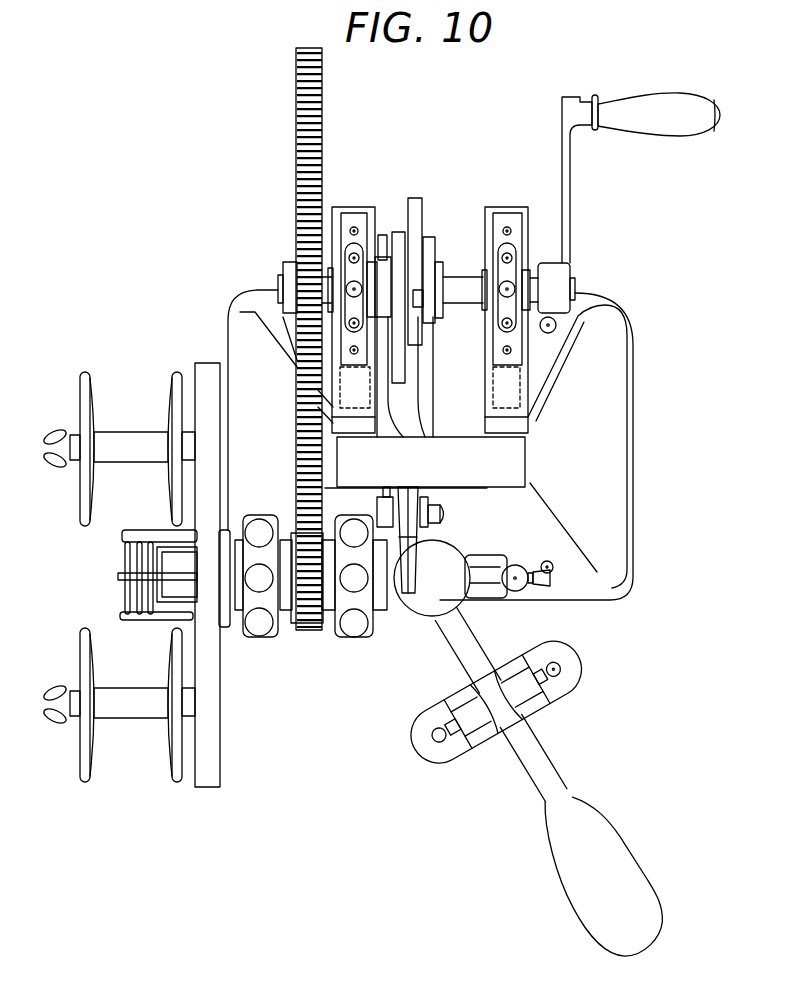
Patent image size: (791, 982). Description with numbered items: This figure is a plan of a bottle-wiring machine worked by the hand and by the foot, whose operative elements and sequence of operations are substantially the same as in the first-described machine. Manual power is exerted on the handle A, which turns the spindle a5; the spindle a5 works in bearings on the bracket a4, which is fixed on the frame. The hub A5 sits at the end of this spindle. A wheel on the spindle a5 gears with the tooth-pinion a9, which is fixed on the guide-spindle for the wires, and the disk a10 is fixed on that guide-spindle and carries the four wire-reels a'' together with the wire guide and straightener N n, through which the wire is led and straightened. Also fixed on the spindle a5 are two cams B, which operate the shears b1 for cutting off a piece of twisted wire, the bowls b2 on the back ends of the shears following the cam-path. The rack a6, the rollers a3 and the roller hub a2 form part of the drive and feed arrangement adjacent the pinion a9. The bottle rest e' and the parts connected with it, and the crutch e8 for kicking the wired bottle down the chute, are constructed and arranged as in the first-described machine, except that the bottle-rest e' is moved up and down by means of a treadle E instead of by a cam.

The handle A is at (629, 203).
The shaft hub A5 is at (279, 282).
The cams B is at (428, 208).
The bracket a4 is at (431, 320).
The spindle a5 is at (486, 290).
The rack a6 is at (296, 339).
The tooth-pinion a9 is at (307, 594).
The disk a10 is at (205, 575).
The wire-reels a'' is at (118, 577).
The rollers a3 is at (314, 587).
The roller hub a2 is at (292, 600).
The wire guide and straightener N is at (158, 564).
The wire guide and straightener n is at (151, 571).
The shears b1 is at (405, 455).
The bowls b2 is at (428, 512).
The bottle rest e' is at (432, 592).
The crutch e8 is at (462, 556).
The treadle E is at (539, 783).